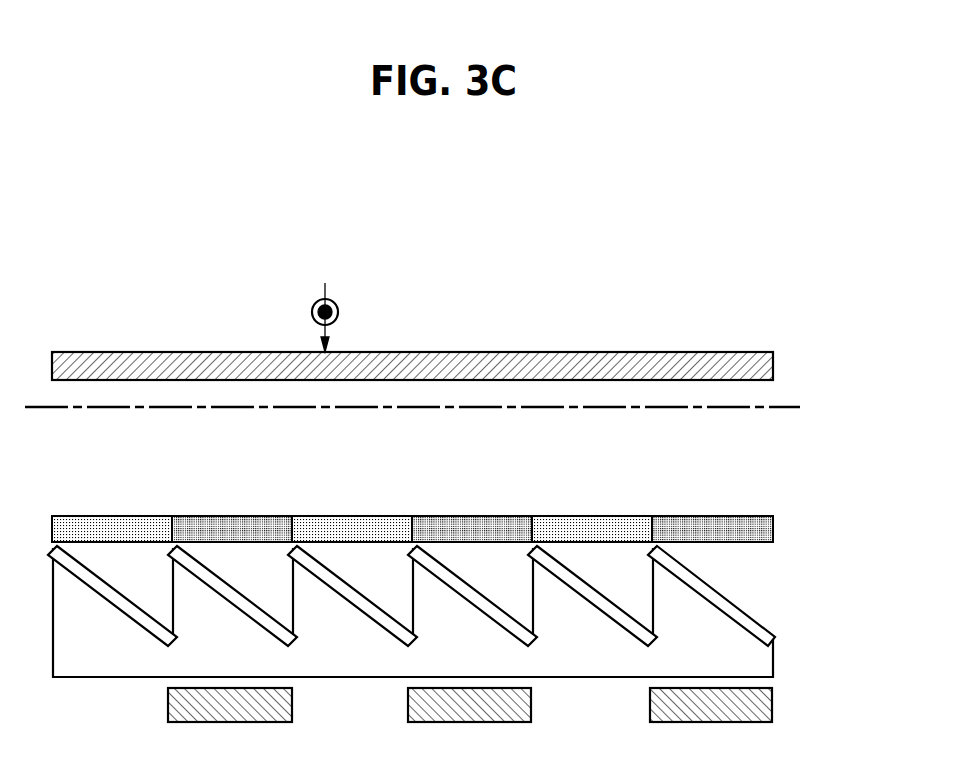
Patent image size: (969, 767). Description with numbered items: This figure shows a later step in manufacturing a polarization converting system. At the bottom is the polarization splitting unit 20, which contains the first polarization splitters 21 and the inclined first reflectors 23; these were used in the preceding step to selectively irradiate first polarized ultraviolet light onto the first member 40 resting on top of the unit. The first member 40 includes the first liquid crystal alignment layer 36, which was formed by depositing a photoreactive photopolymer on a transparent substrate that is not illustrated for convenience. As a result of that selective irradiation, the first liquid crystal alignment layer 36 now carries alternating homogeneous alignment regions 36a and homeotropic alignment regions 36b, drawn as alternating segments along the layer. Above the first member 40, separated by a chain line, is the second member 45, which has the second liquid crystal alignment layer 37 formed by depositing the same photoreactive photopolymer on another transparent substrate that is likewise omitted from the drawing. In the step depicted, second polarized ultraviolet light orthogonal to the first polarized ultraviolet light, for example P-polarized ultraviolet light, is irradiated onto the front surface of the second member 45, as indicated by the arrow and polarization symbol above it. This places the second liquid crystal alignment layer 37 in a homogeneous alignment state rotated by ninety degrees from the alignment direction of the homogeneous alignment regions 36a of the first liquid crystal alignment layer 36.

The second member 45 is at (775, 357).
The second liquid crystal alignment layer 37 is at (452, 352).
The first member 40 is at (465, 480).
The first liquid crystal alignment layer 36 is at (412, 480).
The homogeneous alignment region 36a is at (223, 516).
The homeotropic alignment region 36b is at (305, 516).
The polarization splitting unit 20 is at (446, 632).
The first reflector 23 is at (250, 608).
The first polarization splitter 21 is at (385, 620).